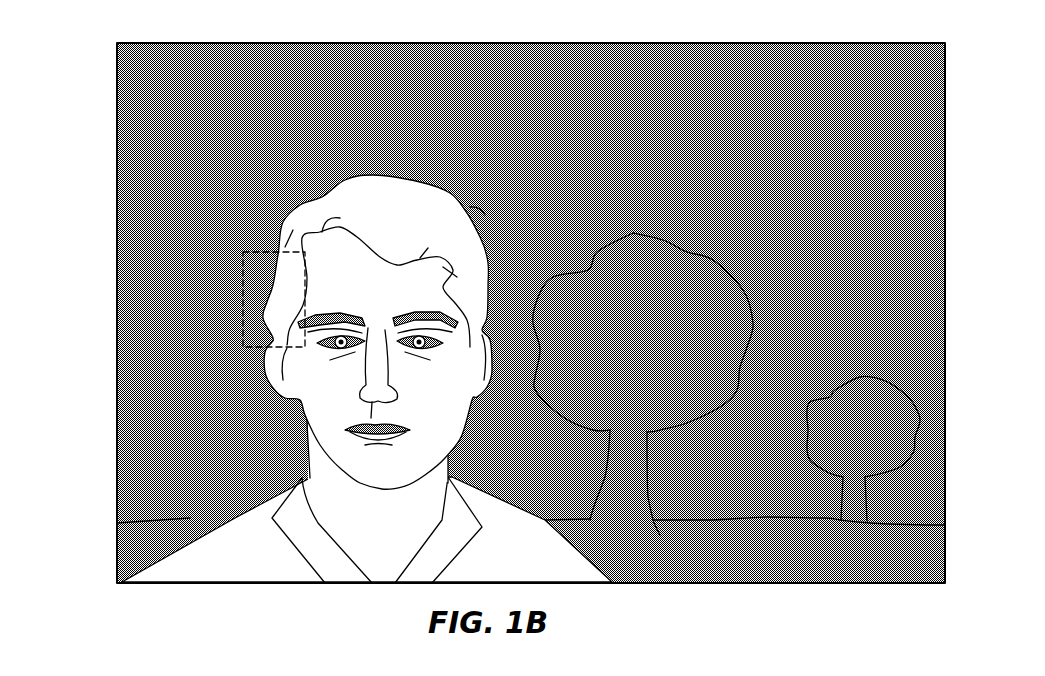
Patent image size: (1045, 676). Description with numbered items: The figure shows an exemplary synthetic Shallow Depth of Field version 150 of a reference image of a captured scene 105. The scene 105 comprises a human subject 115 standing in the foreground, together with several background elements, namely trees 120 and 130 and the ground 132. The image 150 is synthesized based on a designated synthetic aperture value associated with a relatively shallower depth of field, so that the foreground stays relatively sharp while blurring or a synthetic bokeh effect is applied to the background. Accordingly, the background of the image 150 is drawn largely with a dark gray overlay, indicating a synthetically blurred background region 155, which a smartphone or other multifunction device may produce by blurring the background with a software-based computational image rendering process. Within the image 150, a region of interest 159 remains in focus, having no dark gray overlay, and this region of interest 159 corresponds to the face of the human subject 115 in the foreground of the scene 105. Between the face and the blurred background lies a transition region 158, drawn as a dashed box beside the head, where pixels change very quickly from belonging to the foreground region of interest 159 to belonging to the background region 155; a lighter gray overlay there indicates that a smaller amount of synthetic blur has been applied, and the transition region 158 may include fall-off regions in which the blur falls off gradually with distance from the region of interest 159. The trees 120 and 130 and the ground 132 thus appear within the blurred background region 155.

The synthetic Shallow Depth of Field version 150 is at (486, 295).
The captured scene 105 is at (191, 42).
The human subject 115 is at (348, 195).
The synthetically blurred background region 155 is at (188, 369).
The transition region 158 is at (238, 266).
The region of interest 159 is at (327, 403).
The tree 120 is at (588, 253).
The tree 130 is at (900, 383).
The ground 132 is at (692, 538).